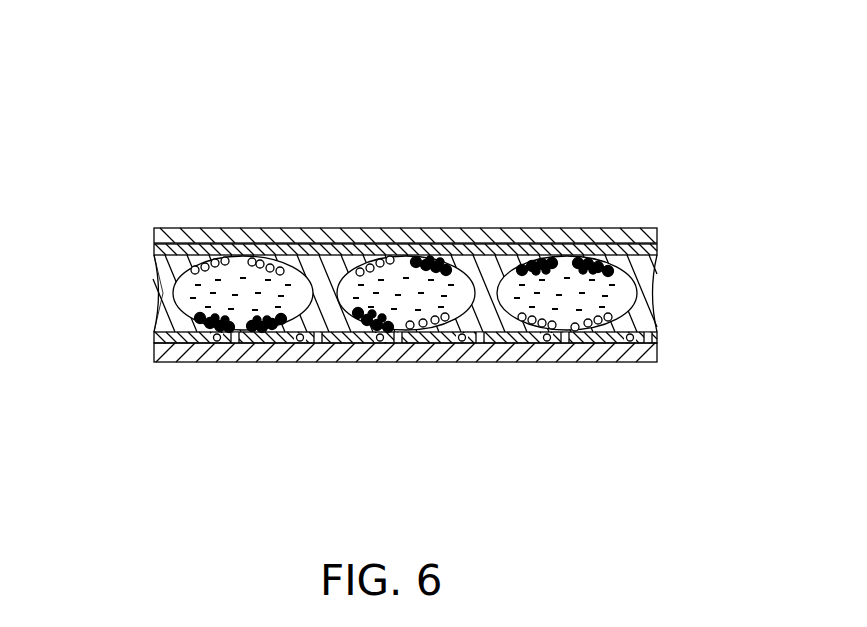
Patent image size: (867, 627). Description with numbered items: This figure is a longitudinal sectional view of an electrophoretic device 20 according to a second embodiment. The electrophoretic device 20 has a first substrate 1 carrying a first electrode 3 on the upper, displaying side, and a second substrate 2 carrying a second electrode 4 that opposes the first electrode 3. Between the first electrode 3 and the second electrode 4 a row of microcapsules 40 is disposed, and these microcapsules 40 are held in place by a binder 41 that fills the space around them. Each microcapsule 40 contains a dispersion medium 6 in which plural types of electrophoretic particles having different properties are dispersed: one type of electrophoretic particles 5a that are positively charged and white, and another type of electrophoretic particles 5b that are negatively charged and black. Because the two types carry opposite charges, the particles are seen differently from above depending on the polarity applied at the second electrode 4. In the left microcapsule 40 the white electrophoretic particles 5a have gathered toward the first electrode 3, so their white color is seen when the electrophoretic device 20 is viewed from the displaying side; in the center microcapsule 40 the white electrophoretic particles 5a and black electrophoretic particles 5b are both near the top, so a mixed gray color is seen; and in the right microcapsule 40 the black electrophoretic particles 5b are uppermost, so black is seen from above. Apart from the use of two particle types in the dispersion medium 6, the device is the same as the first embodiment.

The electrophoretic device 20 is at (626, 157).
The first substrate 1 is at (550, 228).
The second substrate 2 is at (455, 362).
The first electrode 3 is at (497, 228).
The second electrode 4 is at (322, 338).
The electrophoretic particles (white, positively charged) 5a is at (262, 262).
The electrophoretic particles (black, negatively charged) 5b is at (462, 262).
The dispersion medium 6 is at (630, 297).
The microcapsules 40 is at (335, 240).
The binder 41 is at (160, 272).